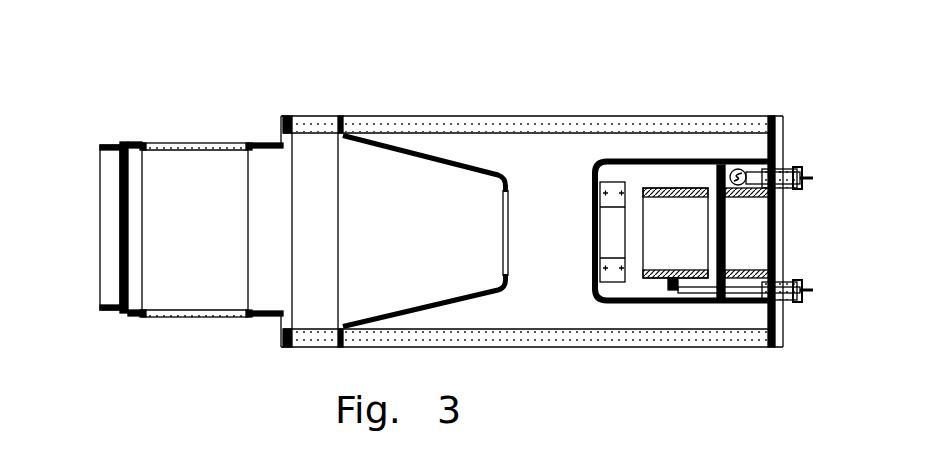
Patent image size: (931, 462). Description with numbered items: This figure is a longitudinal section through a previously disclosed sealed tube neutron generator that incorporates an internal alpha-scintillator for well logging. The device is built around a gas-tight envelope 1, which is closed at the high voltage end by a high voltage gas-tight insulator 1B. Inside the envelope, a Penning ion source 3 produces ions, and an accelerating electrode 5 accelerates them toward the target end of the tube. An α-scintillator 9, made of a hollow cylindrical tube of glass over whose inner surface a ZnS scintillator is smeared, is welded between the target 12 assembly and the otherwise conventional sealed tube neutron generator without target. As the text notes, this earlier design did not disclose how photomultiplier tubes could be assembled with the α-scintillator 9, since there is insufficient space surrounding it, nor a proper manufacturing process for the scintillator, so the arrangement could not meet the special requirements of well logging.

The gas-tight envelope 1 is at (542, 128).
The high voltage gas-tight insulator 1B is at (790, 168).
The Penning ion source 3 is at (648, 160).
The accelerating electrode 5 is at (422, 152).
The α-scintillator 9 is at (220, 148).
The target 12 is at (127, 175).